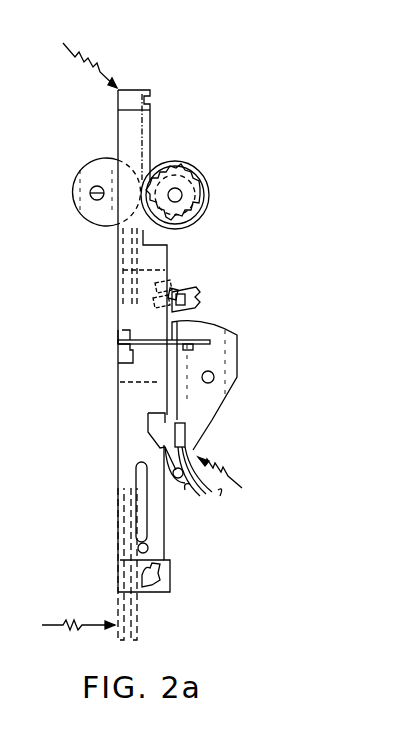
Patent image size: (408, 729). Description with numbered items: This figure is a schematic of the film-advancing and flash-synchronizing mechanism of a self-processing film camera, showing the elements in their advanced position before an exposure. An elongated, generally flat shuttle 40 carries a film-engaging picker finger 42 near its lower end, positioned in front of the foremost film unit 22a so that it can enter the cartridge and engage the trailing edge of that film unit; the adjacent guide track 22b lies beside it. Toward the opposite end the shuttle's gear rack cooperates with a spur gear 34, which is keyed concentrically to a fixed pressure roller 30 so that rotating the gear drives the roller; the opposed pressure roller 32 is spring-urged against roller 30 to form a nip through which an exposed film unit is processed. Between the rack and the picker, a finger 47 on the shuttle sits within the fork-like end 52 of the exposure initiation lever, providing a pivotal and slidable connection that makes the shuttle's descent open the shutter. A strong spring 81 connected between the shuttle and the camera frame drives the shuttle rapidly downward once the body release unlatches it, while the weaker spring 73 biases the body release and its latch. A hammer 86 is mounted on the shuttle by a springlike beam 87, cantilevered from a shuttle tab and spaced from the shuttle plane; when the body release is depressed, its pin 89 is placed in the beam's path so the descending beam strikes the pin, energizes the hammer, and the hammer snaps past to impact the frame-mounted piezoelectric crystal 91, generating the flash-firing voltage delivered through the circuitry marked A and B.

The foremost film unit 22a is at (137, 623).
The guide rail 22b is at (115, 635).
The pressure roller 30 is at (200, 170).
The pressure roller 32 is at (72, 170).
The spur gear 34 is at (200, 198).
The shuttle 40 is at (118, 412).
The picker finger 42 is at (177, 580).
The finger 47 is at (173, 278).
The fork-like end 52 is at (190, 290).
The spring 73 is at (235, 484).
The spring 81 is at (83, 53).
The hammer 86 is at (193, 347).
The springlike beam 87 is at (118, 332).
The pin 89 is at (214, 377).
The piezoelectric crystal 91 is at (190, 433).